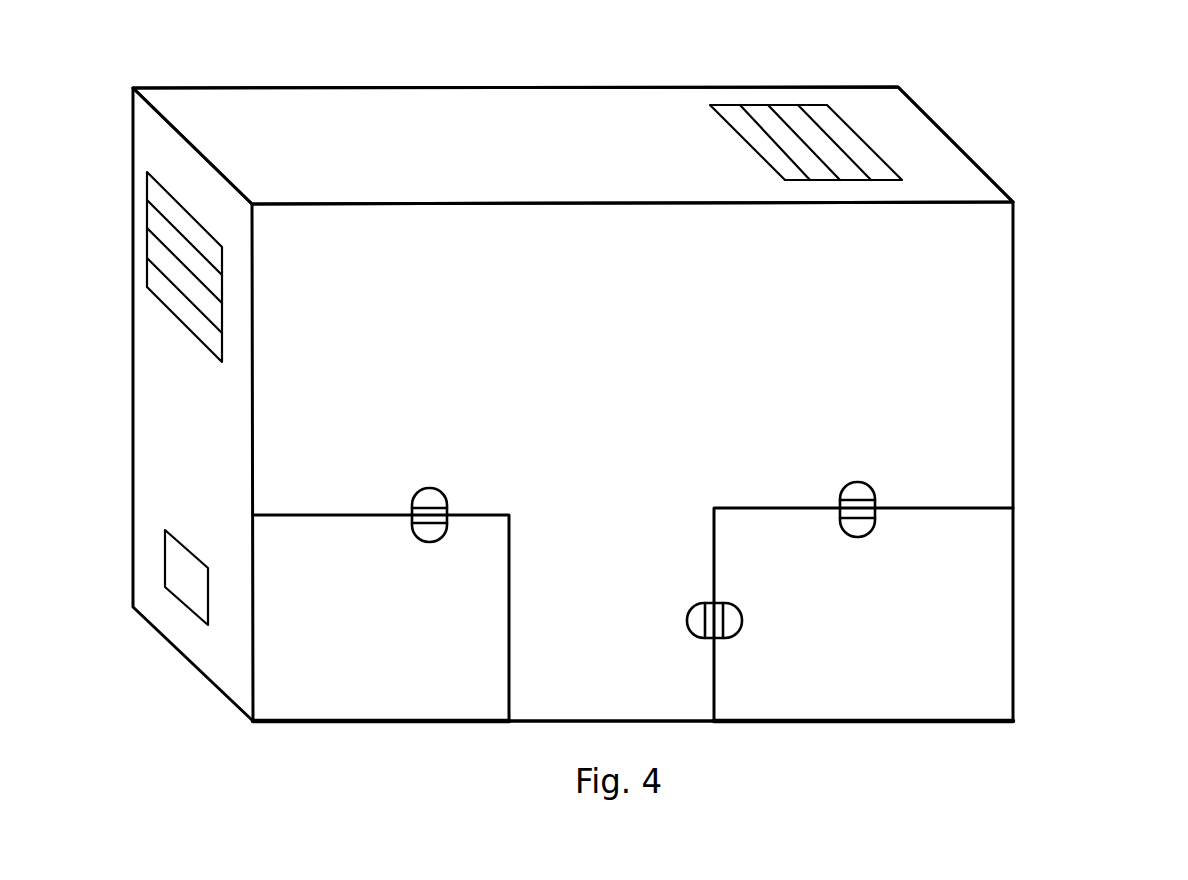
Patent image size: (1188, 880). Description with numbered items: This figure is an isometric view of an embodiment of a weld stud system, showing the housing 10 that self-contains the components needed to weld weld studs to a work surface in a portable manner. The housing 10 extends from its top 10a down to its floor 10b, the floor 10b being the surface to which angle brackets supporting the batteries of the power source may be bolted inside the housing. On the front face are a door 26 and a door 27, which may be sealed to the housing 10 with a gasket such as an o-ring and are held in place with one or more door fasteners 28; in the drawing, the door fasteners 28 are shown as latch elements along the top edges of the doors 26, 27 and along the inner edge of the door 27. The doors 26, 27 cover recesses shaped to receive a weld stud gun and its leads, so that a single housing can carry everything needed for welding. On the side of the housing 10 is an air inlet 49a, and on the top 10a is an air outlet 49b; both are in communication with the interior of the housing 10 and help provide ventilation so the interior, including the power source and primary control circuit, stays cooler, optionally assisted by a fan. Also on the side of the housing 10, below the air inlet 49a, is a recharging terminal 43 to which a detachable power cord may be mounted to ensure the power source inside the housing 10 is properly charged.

The housing 10 is at (599, 421).
The top of housing 10a is at (475, 126).
The floor 10b is at (343, 725).
The door 26 is at (357, 513).
The door 27 is at (902, 508).
The door fasteners 28 is at (840, 495).
The recharging terminal 43 is at (195, 615).
The air inlet 49a is at (175, 316).
The air outlet 49b is at (759, 105).